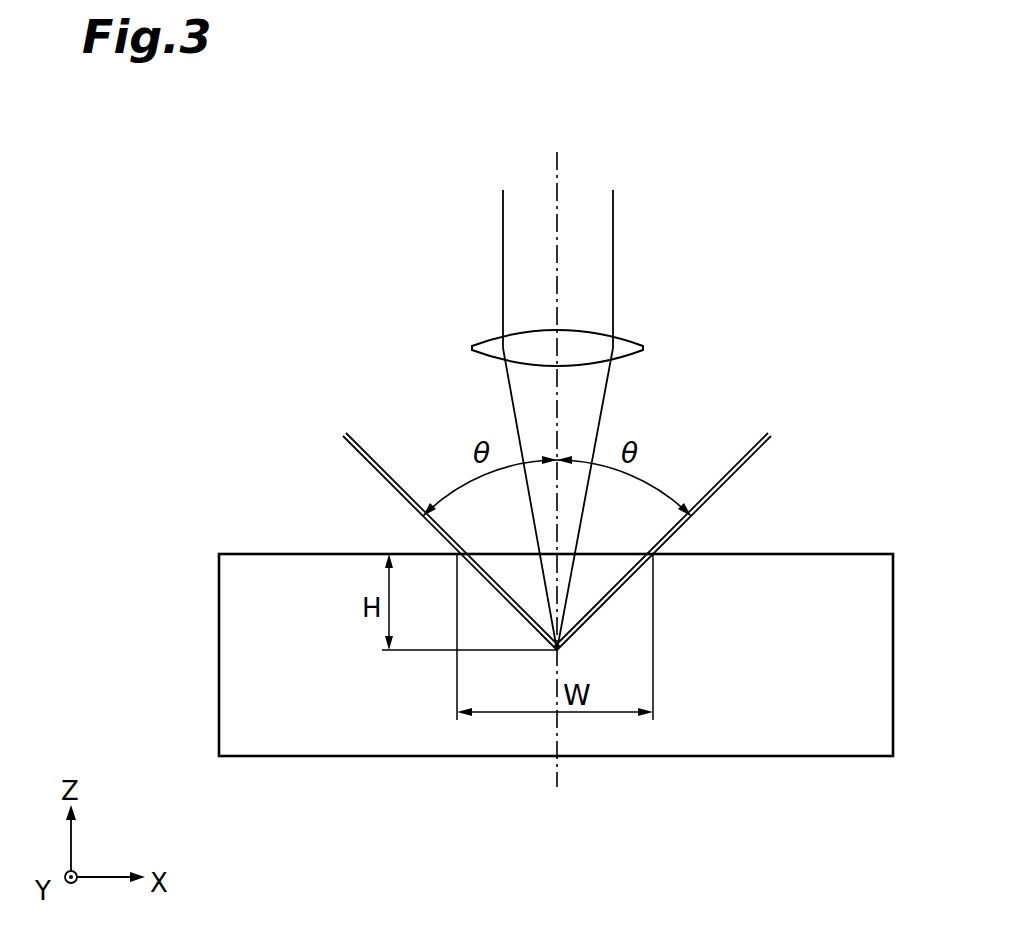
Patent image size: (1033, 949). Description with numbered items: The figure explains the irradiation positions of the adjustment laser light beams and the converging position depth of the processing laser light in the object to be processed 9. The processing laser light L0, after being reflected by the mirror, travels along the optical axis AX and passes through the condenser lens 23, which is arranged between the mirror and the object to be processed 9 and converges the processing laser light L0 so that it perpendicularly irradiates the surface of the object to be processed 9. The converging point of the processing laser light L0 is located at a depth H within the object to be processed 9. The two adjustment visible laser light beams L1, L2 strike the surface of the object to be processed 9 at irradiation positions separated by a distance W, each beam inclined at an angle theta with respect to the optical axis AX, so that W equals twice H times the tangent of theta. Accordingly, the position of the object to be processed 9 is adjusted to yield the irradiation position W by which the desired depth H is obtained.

The condenser lens 23 is at (492, 338).
The object to be processed 9 is at (238, 598).
The optical axis AX is at (556, 453).
The processing laser light L0 is at (603, 410).
The adjustment visible laser light beam L1 is at (748, 462).
The adjustment visible laser light beam L2 is at (367, 460).